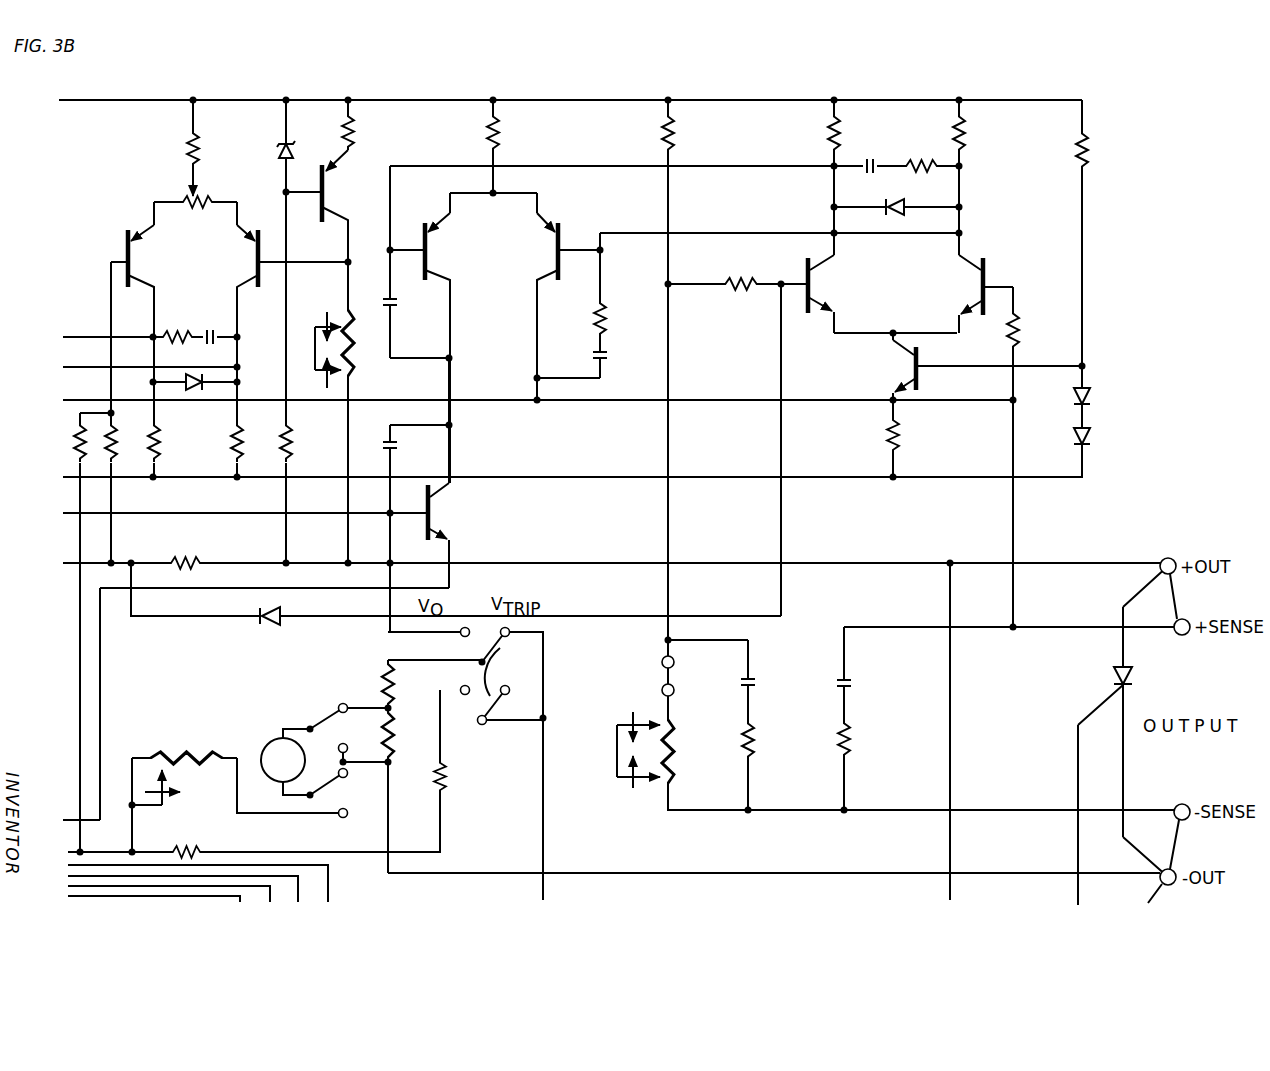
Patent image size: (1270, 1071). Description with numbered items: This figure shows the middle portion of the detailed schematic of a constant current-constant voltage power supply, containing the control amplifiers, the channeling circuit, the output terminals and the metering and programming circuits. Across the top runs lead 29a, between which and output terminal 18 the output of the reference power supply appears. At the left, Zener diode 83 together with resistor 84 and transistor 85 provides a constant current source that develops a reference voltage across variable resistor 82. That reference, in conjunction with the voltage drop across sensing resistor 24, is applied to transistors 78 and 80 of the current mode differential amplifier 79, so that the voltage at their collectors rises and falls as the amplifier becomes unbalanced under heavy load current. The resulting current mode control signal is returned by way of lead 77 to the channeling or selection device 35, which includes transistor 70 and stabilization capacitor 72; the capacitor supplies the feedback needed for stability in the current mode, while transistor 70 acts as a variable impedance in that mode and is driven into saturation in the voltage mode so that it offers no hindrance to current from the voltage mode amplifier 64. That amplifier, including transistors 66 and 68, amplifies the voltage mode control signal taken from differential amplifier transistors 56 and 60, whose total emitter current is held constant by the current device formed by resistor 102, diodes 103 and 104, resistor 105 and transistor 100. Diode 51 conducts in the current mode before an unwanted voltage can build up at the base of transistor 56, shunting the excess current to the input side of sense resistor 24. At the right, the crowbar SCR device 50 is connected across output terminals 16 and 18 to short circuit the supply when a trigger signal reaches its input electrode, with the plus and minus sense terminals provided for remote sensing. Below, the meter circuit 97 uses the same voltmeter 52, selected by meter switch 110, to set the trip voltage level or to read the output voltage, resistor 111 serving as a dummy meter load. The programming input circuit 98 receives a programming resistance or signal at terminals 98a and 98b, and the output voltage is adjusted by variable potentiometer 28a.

The lead 29a is at (399, 98).
The resistor 84 is at (352, 128).
The transistor 85 is at (336, 184).
The Zener diode 83 is at (280, 150).
The transistor 78 is at (126, 240).
The current mode differential amplifier 79 is at (195, 180).
The transistor 80 is at (258, 238).
The transistor 66 is at (440, 242).
The transistor 68 is at (537, 242).
The voltage mode amplifier 64 is at (493, 180).
The differential amplifier transistor 56 is at (820, 282).
The differential amplifier transistor 60 is at (950, 283).
The resistor 102 is at (1090, 152).
The transistor 100 is at (905, 368).
The diode 103 is at (1092, 393).
The diode 104 is at (1092, 433).
The resistor 105 is at (898, 437).
The variable resistor 82 is at (355, 360).
The stabilization capacitor 72 is at (382, 446).
The lead 77 is at (225, 512).
The transistor 70 is at (440, 510).
The channeling device 35 is at (419, 449).
The sensing resistor 24 is at (186, 560).
The diode 51 is at (275, 608).
The output terminal 18 is at (1166, 558).
The terminal 98a is at (661, 665).
The terminal 98b is at (661, 693).
The variable potentiometer 28a is at (682, 752).
The programming input circuit 98 is at (654, 725).
The crowbar SCR device 50 is at (1132, 677).
The meter switch 110 is at (497, 652).
The resistor 111 is at (448, 778).
The voltmeter 52 is at (318, 750).
The meter circuit 97 is at (240, 785).
The output terminal 16 is at (1175, 868).